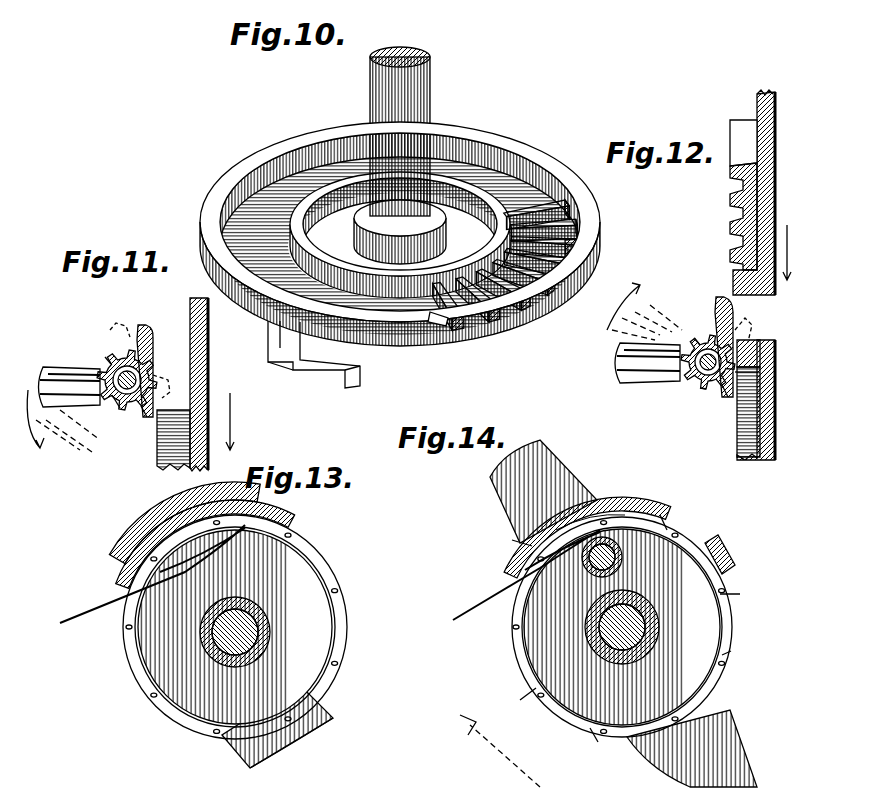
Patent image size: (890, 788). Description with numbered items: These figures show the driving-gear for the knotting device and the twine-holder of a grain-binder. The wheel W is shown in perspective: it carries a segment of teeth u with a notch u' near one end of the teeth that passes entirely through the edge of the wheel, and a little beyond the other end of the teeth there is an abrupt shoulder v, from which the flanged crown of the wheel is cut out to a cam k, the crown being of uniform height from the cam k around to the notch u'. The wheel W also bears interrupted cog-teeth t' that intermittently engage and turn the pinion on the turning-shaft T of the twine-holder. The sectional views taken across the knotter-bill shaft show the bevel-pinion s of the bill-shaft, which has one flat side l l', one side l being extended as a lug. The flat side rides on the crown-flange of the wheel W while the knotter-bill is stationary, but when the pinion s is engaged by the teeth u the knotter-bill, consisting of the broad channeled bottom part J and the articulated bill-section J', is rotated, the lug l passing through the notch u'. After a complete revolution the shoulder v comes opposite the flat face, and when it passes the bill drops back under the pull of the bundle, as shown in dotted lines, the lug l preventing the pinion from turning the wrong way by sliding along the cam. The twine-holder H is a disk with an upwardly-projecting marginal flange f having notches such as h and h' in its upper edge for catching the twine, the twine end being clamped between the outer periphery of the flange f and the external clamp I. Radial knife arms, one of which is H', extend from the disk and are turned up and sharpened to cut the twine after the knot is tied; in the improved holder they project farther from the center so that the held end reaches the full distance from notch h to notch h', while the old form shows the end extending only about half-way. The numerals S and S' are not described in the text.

In FIG. 10, the shaft F is at (432, 103).
In FIG. 10, the cam k is at (312, 136).
In FIG. 10, the wheel W is at (400, 223).
In FIG. 11, the wheel W is at (212, 384).
In FIG. 12, the wheel W is at (769, 275).
In FIG. 10, the interrupted cog-teeth t' is at (400, 232).
In FIG. 10, the segment of teeth u is at (505, 265).
In FIG. 12, the segment of teeth u is at (727, 216).
In FIG. 10, the notch u' is at (584, 263).
In FIG. 12, the notch u' is at (766, 384).
In FIG. 10, the shoulder v is at (446, 326).
In FIG. 11, the shoulder v is at (173, 440).
In FIG. 12, the shoulder v is at (740, 120).
In FIG. 11, the knotter-bill bottom part J is at (61, 368).
In FIG. 12, the knotter-bill bottom part J is at (630, 358).
In FIG. 11, the bill-section J' is at (63, 428).
In FIG. 12, the bill-section J' is at (631, 336).
In FIG. 11, the star wheel S is at (104, 375).
In FIG. 12, the star wheel S is at (687, 376).
In FIG. 11, the star wheel tooth S' is at (95, 345).
In FIG. 12, the star wheel tooth S' is at (690, 412).
In FIG. 11, the lug l is at (132, 351).
In FIG. 12, the lug l is at (727, 331).
In FIG. 11, the flat side l' is at (137, 431).
In FIG. 12, the flat side l' is at (720, 410).
In FIG. 11, the bevel-pinion s is at (116, 400).
In FIG. 12, the bevel-pinion s is at (696, 340).
In FIG. 13, the clamp I is at (172, 516).
In FIG. 14, the clamp I is at (596, 498).
In FIG. 14, the twine-holder H is at (622, 627).
In FIG. 14, the knife H' is at (543, 491).
In FIG. 14, the notch h is at (602, 627).
In FIG. 14, the notch h' is at (682, 513).
In FIG. 14, the turning-shaft T is at (632, 655).
In FIG. 14, the flange f is at (512, 540).